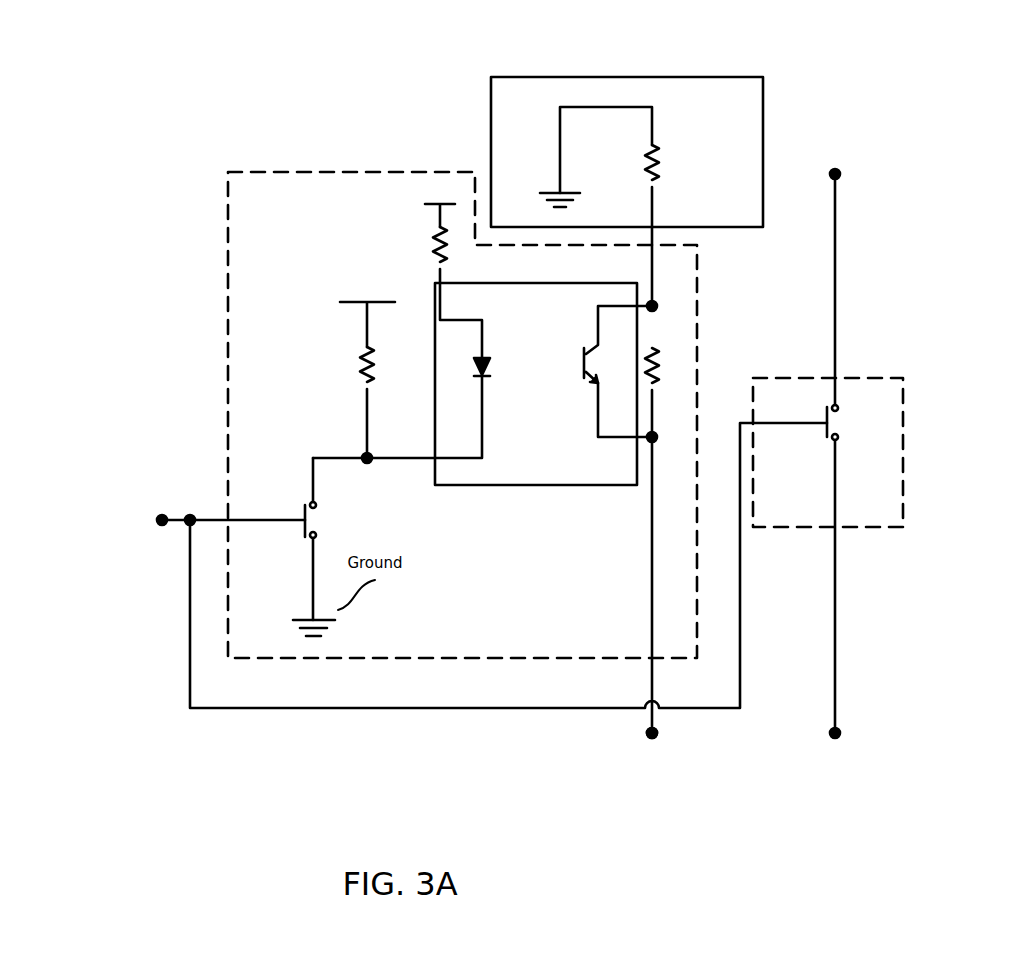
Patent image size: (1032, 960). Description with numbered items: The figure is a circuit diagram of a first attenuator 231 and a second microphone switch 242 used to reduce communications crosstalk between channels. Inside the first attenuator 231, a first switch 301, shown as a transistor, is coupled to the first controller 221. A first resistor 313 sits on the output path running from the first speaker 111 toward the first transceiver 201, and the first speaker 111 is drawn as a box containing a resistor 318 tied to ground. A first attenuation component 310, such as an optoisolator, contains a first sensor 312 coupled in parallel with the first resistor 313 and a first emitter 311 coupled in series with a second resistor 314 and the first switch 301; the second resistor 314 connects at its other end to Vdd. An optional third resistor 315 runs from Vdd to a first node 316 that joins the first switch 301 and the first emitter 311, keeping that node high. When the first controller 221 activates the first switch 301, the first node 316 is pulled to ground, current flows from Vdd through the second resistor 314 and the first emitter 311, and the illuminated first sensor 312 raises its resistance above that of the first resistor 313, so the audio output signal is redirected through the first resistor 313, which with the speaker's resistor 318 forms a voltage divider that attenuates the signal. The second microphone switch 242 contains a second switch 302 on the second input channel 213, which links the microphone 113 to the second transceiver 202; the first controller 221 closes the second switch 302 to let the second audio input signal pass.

The first speaker 111 is at (763, 77).
The resistor 318 is at (670, 165).
The first attenuator 231 is at (228, 235).
The second resistor 314 is at (425, 251).
The first attenuation component 310 is at (523, 487).
The first emitter 311 is at (500, 362).
The first sensor 312 is at (577, 378).
The first resistor 313 is at (670, 340).
The third resistor 315 is at (370, 370).
The first node 316 is at (378, 450).
The first switch 301 is at (295, 540).
The first controller 221 is at (171, 512).
The second input channel 213 is at (857, 280).
The microphone 113 is at (834, 147).
The second microphone switch 242 is at (810, 378).
The second switch 302 is at (830, 443).
The first transceiver 201 is at (651, 766).
The second transceiver 202 is at (834, 766).